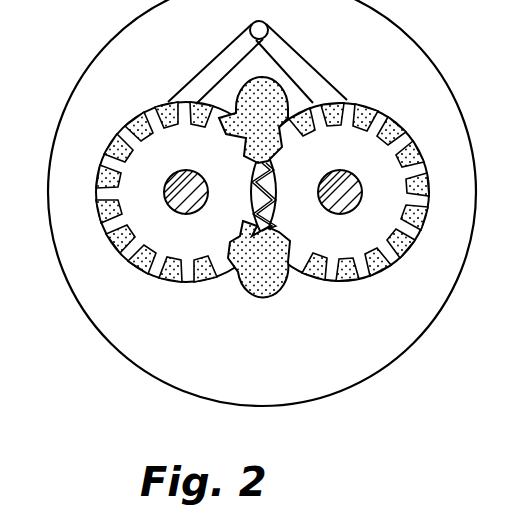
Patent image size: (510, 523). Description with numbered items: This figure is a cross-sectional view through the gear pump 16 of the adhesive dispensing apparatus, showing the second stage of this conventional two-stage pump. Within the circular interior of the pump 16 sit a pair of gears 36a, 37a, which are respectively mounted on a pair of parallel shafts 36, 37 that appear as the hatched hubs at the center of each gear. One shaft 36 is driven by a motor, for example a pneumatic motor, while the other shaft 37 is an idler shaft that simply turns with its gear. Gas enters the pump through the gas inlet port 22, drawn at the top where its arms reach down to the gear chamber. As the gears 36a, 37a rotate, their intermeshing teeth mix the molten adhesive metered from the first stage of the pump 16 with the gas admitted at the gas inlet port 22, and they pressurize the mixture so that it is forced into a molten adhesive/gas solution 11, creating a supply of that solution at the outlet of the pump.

The molten adhesive/gas solution 11 is at (264, 290).
The pump 16 is at (208, 406).
The gas inlet port 22 is at (267, 25).
The shaft 36 is at (196, 171).
The gear 36a is at (190, 249).
The idler shaft 37 is at (351, 157).
The gear 37a is at (354, 249).